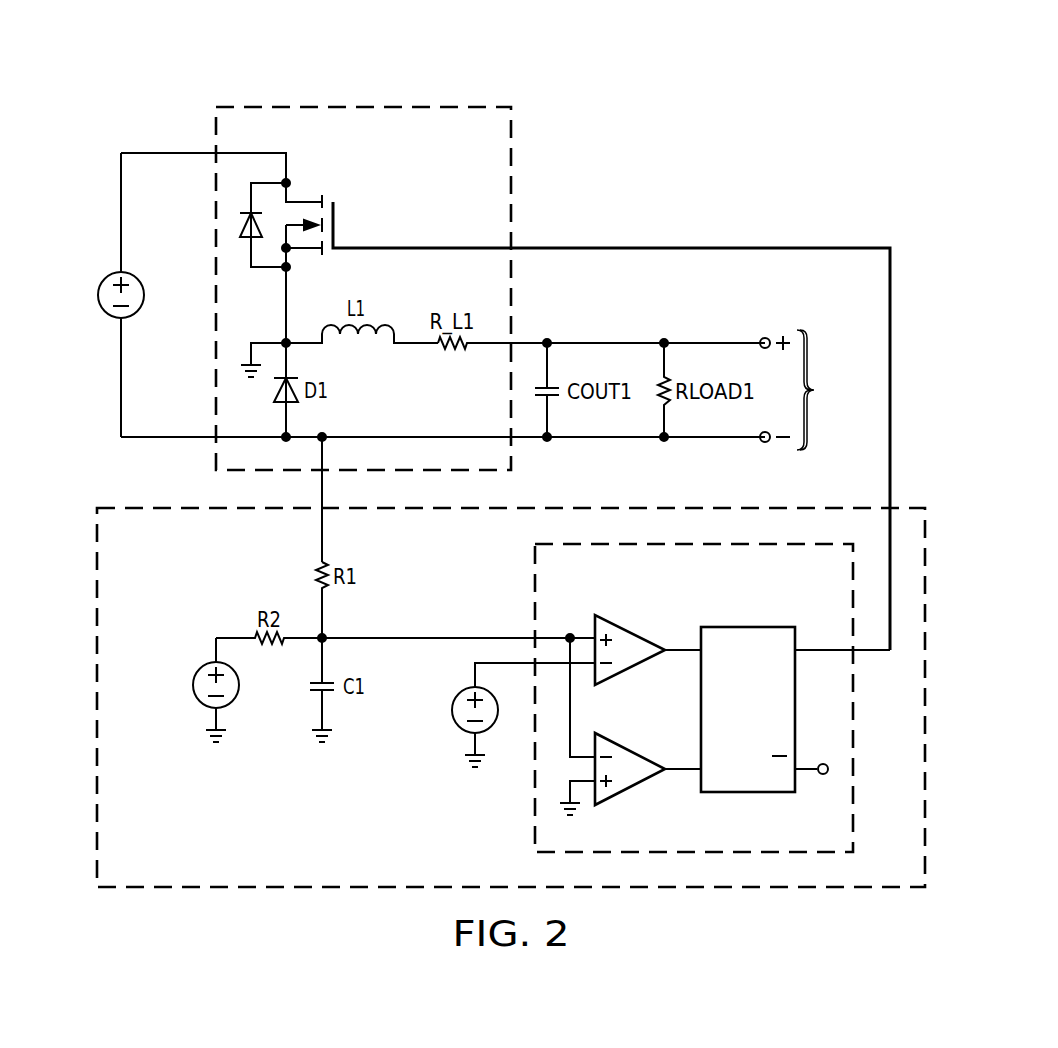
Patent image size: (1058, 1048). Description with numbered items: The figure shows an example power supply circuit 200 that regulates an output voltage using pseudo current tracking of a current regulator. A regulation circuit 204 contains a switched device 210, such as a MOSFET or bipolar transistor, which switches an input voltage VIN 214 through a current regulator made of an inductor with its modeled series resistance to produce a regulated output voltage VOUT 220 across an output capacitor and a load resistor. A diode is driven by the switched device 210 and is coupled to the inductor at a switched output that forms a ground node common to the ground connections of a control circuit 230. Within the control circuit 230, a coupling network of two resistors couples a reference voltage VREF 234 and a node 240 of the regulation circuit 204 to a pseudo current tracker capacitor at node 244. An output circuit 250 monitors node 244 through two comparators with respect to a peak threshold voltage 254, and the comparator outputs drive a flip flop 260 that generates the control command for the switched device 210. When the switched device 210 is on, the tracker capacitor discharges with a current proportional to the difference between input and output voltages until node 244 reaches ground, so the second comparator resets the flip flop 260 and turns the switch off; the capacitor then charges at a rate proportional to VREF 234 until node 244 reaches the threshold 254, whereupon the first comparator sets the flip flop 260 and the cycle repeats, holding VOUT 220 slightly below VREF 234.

The power supply circuit 200 is at (712, 70).
The regulation circuit 204 is at (362, 104).
The switched device 210 is at (336, 212).
The input voltage VIN 214 is at (98, 295).
The regulated output voltage VOUT 220 is at (811, 390).
The control circuit 230 is at (295, 856).
The reference voltage VREF 234 is at (193, 687).
The node of the regulation circuit 240 is at (378, 437).
The node 244 is at (387, 638).
The output circuit 250 is at (533, 583).
The peak threshold voltage 254 is at (452, 710).
The flip flop 260 is at (770, 722).